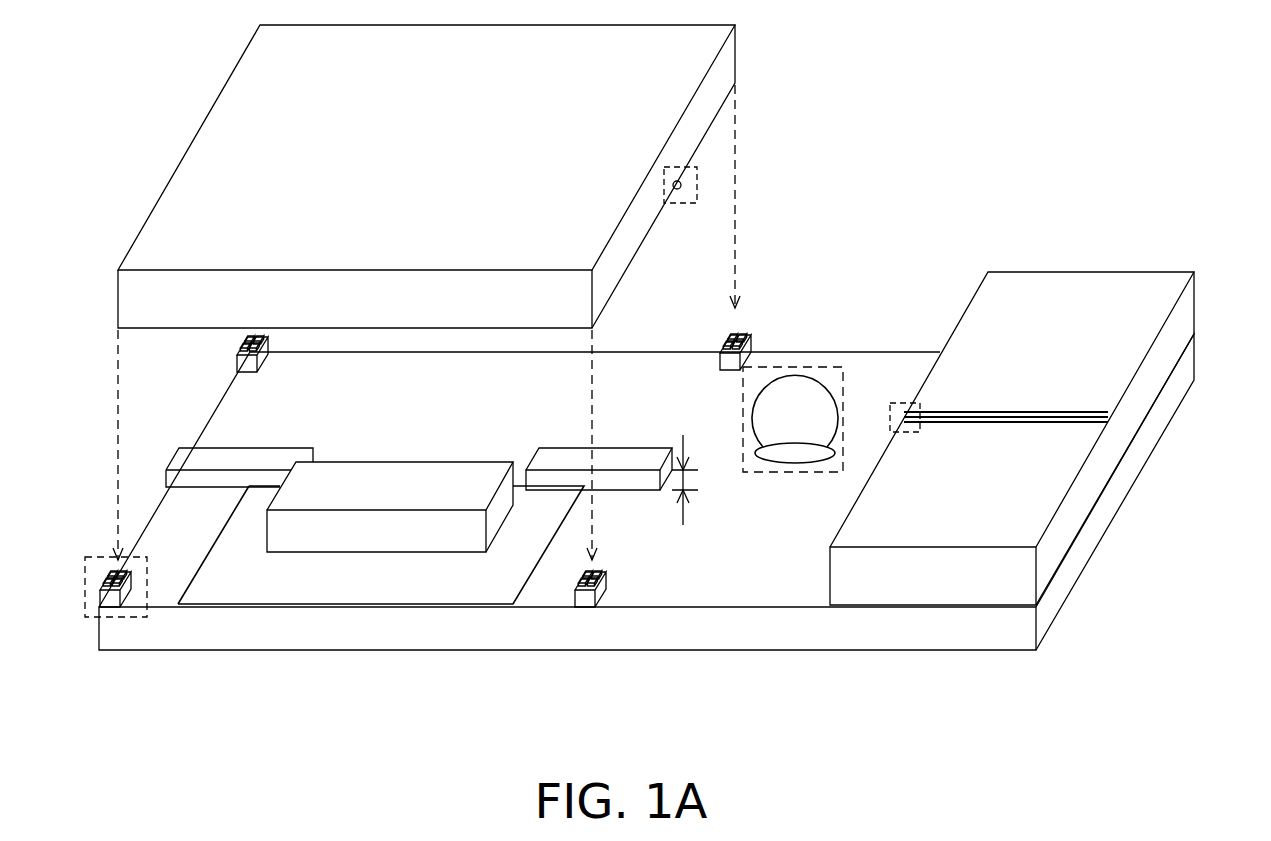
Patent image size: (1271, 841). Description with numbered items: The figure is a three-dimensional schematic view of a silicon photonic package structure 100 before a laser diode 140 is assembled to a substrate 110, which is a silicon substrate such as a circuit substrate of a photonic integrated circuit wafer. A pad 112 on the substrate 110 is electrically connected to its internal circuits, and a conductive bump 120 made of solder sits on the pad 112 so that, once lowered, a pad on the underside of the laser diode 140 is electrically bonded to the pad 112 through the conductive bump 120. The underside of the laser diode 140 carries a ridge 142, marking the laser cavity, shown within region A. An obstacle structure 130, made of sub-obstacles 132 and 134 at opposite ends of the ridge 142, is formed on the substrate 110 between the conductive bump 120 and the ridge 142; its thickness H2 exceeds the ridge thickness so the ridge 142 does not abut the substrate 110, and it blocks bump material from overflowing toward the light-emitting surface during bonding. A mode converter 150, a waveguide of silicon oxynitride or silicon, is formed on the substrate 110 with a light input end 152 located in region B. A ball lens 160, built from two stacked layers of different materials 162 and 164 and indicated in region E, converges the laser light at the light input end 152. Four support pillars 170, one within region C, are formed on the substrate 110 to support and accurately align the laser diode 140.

The silicon photonic package structure 100 is at (1168, 708).
The substrate 110 is at (860, 628).
The pad 112 is at (420, 582).
The conductive bump 120 is at (330, 530).
The obstacle structure 130 is at (419, 420).
The sub-obstacle 132 is at (563, 458).
The sub-obstacle 134 is at (305, 447).
The laser diode 140 is at (205, 155).
The ridge 142 is at (678, 187).
The mode converter 150 is at (1096, 409).
The light input end 152 is at (891, 420).
The ball lens 160 is at (803, 349).
The material 162 is at (792, 387).
The material 164 is at (810, 457).
The support pillars 170 is at (243, 365).
The region A is at (698, 177).
The region B is at (900, 398).
The region C is at (110, 555).
The region E is at (795, 475).
The thickness of the obstacle structure H2 is at (688, 480).